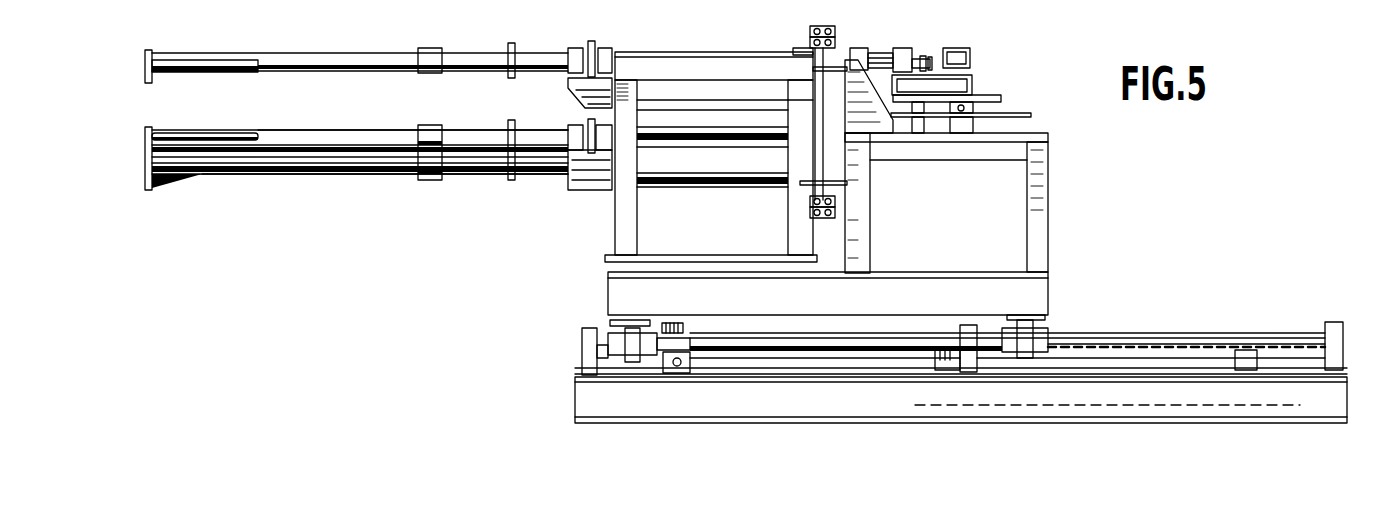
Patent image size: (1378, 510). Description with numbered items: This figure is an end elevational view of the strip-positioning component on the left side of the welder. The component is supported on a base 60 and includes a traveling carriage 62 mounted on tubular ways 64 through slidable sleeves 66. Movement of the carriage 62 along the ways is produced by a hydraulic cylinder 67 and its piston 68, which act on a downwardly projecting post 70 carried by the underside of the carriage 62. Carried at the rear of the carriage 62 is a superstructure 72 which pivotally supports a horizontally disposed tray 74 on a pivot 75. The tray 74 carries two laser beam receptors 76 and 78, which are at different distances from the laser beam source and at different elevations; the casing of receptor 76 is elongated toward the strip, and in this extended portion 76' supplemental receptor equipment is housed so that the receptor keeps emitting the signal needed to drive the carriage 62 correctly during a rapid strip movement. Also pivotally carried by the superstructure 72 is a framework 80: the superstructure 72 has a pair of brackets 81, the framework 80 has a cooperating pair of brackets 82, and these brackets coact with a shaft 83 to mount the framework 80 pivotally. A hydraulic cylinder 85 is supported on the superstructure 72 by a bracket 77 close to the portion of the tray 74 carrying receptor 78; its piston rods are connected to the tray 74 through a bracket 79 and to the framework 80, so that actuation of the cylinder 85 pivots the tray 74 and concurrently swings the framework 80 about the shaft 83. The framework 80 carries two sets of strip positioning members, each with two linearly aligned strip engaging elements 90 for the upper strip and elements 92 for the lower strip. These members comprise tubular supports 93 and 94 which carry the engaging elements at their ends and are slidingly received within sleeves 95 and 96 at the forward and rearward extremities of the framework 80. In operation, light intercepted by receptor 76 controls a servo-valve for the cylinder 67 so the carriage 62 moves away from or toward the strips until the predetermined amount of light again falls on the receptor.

The base 60 is at (1168, 405).
The traveling carriage 62 is at (1050, 303).
The tubular ways 64 is at (1186, 333).
The slidable sleeves 66 is at (611, 333).
The hydraulic cylinder 67 is at (1125, 356).
The piston 68 is at (830, 362).
The downwardly projecting post 70 is at (669, 328).
The superstructure 72 is at (1048, 178).
The tray 74 is at (1032, 115).
The pivot 75 is at (972, 108).
The laser beam receptor 76 is at (947, 67).
The extended portion of receptor casing 76' is at (904, 52).
The bracket 77 is at (901, 130).
The laser beam receptor 78 is at (965, 48).
The bracket 79 is at (927, 57).
The framework 80 is at (616, 205).
The brackets 81 is at (815, 63).
The brackets 82 is at (793, 50).
The shaft 83 is at (822, 118).
The hydraulic cylinder 85 is at (876, 50).
The strip engaging elements 90 is at (146, 72).
The strip engaging elements 92 is at (146, 156).
The tubular supports 93 is at (279, 72).
The tubular supports 94 is at (313, 128).
The sleeves 95 is at (600, 42).
The sleeves 96 is at (584, 122).